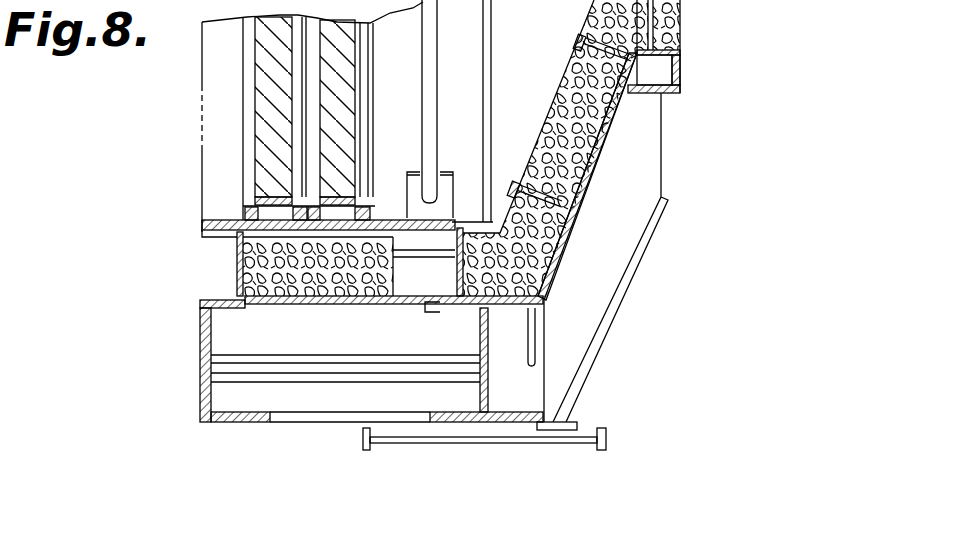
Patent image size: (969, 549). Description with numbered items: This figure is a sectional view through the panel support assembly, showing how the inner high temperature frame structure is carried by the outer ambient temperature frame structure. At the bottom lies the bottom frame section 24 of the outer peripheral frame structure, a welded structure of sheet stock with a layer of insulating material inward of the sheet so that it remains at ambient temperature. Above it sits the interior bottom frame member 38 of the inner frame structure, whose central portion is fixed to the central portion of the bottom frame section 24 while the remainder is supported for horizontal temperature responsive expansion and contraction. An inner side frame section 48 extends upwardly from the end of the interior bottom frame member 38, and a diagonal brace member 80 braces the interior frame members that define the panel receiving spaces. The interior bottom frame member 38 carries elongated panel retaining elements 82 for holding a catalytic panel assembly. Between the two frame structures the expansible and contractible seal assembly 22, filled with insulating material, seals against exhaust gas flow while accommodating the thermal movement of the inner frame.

The seal assembly 22 is at (466, 218).
The bottom frame section 24 is at (203, 338).
The interior bottom frame member 38 is at (230, 222).
The inner side frame section 48 is at (468, 24).
The diagonal brace member 80 is at (433, 78).
The panel retaining element 82 is at (272, 240).